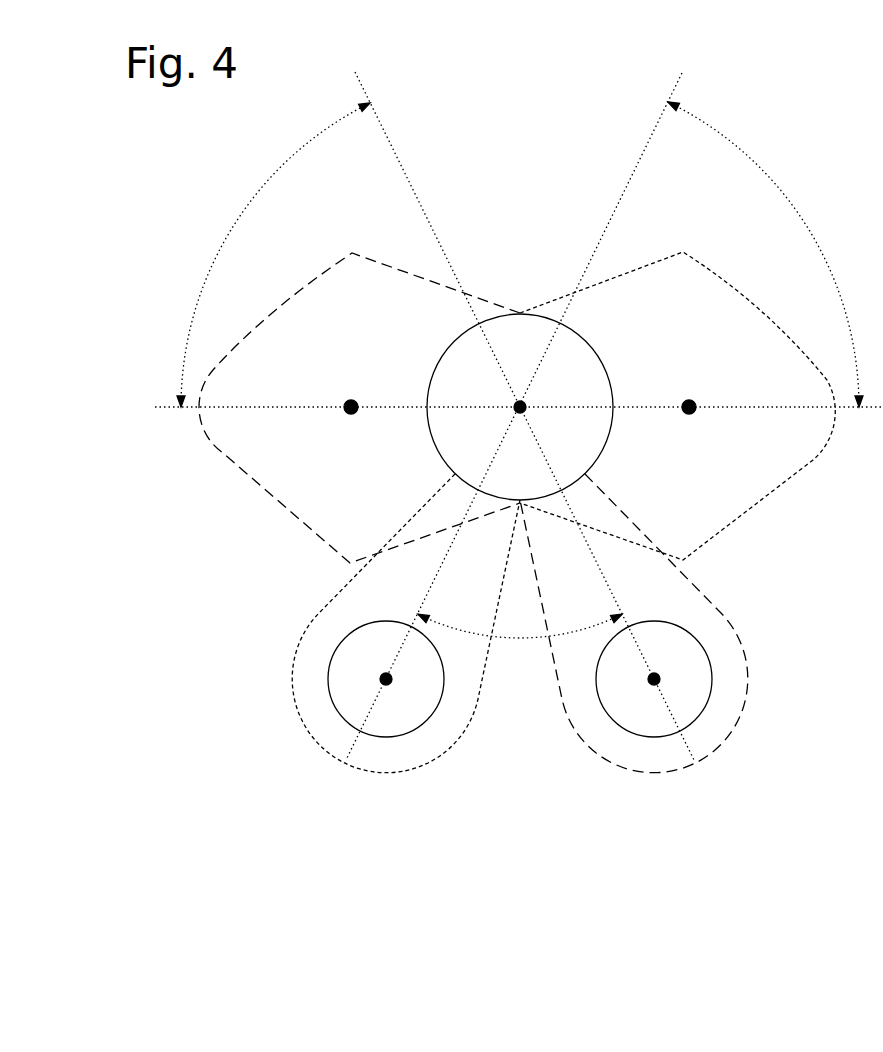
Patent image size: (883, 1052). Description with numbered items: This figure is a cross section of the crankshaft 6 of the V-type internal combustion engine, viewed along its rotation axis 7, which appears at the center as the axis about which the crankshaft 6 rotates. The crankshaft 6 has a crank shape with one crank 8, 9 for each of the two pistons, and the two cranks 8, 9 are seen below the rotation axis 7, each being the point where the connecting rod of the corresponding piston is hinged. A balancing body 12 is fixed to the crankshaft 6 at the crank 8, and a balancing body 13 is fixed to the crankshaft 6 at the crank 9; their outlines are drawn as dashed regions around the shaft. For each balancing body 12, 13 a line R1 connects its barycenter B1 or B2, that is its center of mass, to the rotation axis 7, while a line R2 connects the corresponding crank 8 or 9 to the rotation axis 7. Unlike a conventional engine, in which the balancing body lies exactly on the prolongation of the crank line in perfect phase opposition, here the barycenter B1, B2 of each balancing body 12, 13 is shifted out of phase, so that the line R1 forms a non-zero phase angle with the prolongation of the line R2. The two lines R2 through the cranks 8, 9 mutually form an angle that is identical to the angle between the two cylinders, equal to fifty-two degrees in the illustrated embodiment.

The crankshaft 6 is at (158, 652).
The rotation axis 7 is at (527, 413).
The crank 8 is at (675, 684).
The crank 9 is at (362, 684).
The balancing body 12 is at (338, 293).
The balancing body 13 is at (723, 303).
The barycenter B1 is at (348, 400).
The barycenter B2 is at (690, 413).
The line R1 is at (397, 153).
The line R2 is at (633, 170).